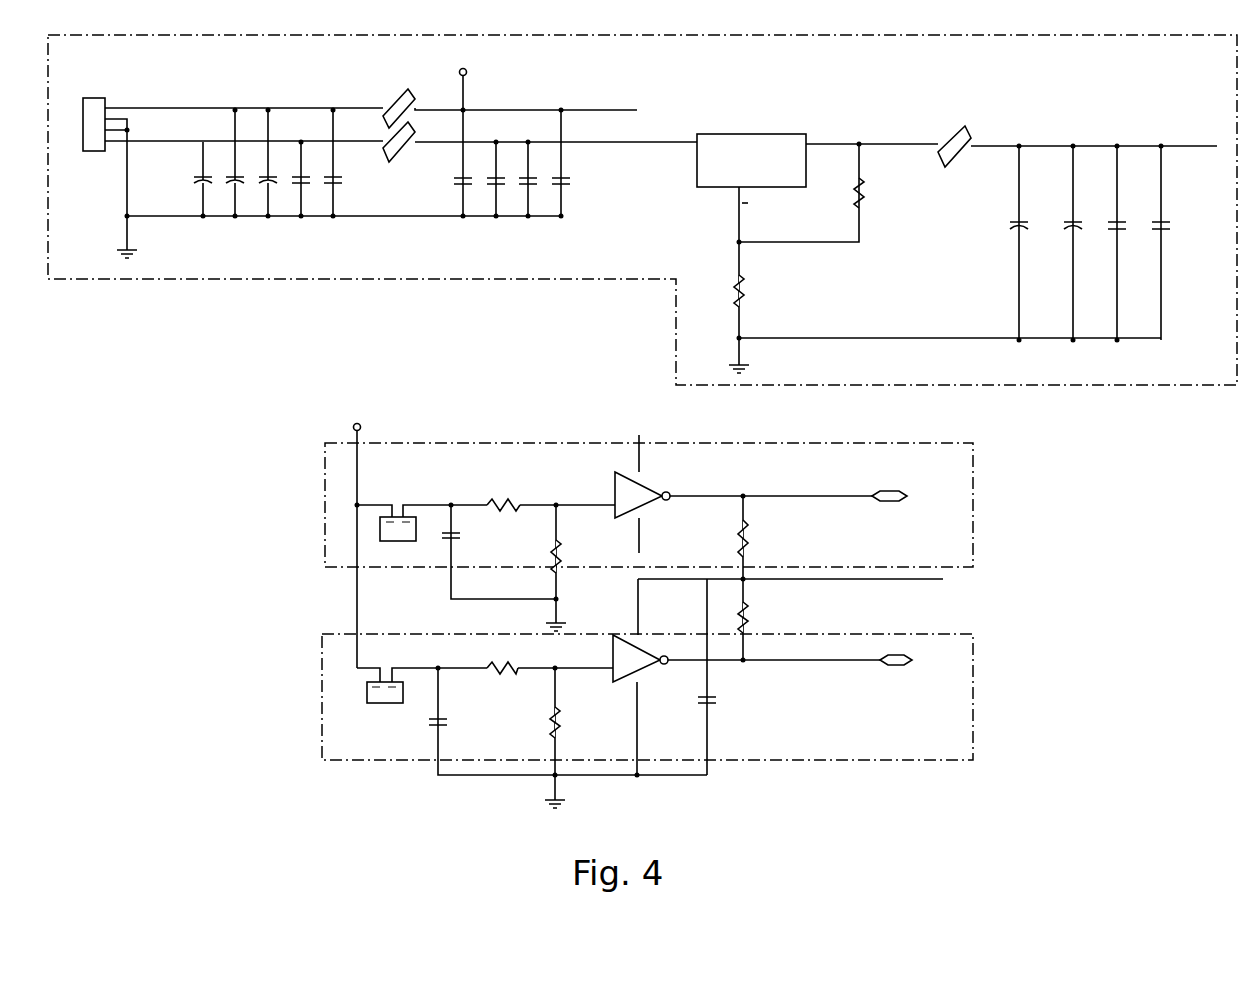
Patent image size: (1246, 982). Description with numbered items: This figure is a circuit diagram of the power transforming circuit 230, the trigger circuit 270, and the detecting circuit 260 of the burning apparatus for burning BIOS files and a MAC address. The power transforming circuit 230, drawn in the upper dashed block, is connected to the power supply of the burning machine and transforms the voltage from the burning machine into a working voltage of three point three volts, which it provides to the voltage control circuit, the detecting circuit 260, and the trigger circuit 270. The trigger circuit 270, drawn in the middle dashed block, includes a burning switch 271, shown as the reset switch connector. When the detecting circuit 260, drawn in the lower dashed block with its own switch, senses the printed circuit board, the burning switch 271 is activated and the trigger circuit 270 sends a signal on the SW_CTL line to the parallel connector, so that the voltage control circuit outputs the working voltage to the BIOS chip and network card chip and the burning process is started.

The power transforming circuit 230 is at (1037, 361).
The trigger circuit 270 is at (342, 453).
The burning switch 271 is at (398, 517).
The detecting circuit 260 is at (327, 662).